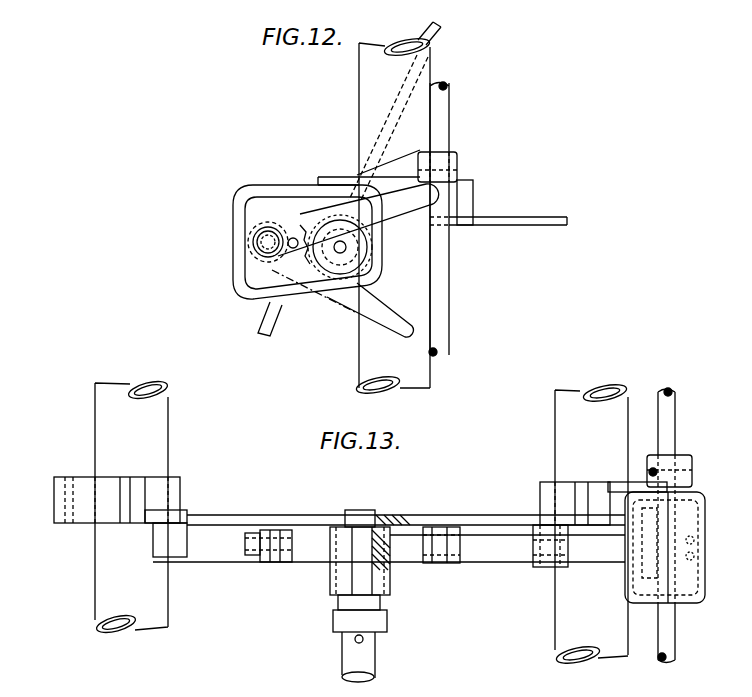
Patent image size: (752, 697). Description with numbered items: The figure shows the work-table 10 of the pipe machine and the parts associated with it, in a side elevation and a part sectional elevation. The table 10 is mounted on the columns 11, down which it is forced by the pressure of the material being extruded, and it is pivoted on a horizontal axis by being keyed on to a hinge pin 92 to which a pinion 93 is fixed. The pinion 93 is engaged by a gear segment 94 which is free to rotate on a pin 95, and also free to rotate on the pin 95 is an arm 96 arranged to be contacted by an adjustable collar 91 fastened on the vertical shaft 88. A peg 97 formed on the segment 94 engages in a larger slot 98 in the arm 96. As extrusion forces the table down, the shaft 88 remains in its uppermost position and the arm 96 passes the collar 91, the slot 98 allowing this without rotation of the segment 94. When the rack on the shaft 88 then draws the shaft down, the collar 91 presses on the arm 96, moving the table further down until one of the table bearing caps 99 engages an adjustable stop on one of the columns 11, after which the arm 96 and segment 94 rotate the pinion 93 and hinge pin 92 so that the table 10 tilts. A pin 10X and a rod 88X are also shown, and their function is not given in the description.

In FIG. 12, the work-table 10 is at (357, 173).
In FIG. 13, the work-table 10 is at (240, 555).
In FIG. 12, the pin 10X is at (268, 316).
In FIG. 13, the columns 11 is at (103, 577).
In FIG. 13, the vertical shaft 88 is at (665, 417).
In FIG. 12, the rod 88X is at (438, 313).
In FIG. 12, the adjustable collar 91 is at (457, 163).
In FIG. 13, the adjustable collar 91 is at (679, 465).
In FIG. 12, the hinge pin 92 is at (370, 252).
In FIG. 12, the pinion 93 is at (370, 273).
In FIG. 12, the gear segment 94 is at (267, 222).
In FIG. 12, the pin 95 is at (277, 259).
In FIG. 12, the arm 96 is at (393, 206).
In FIG. 12, the peg 97 is at (292, 238).
In FIG. 12, the slot 98 is at (315, 254).
In FIG. 13, the table bearing caps 99 is at (63, 512).